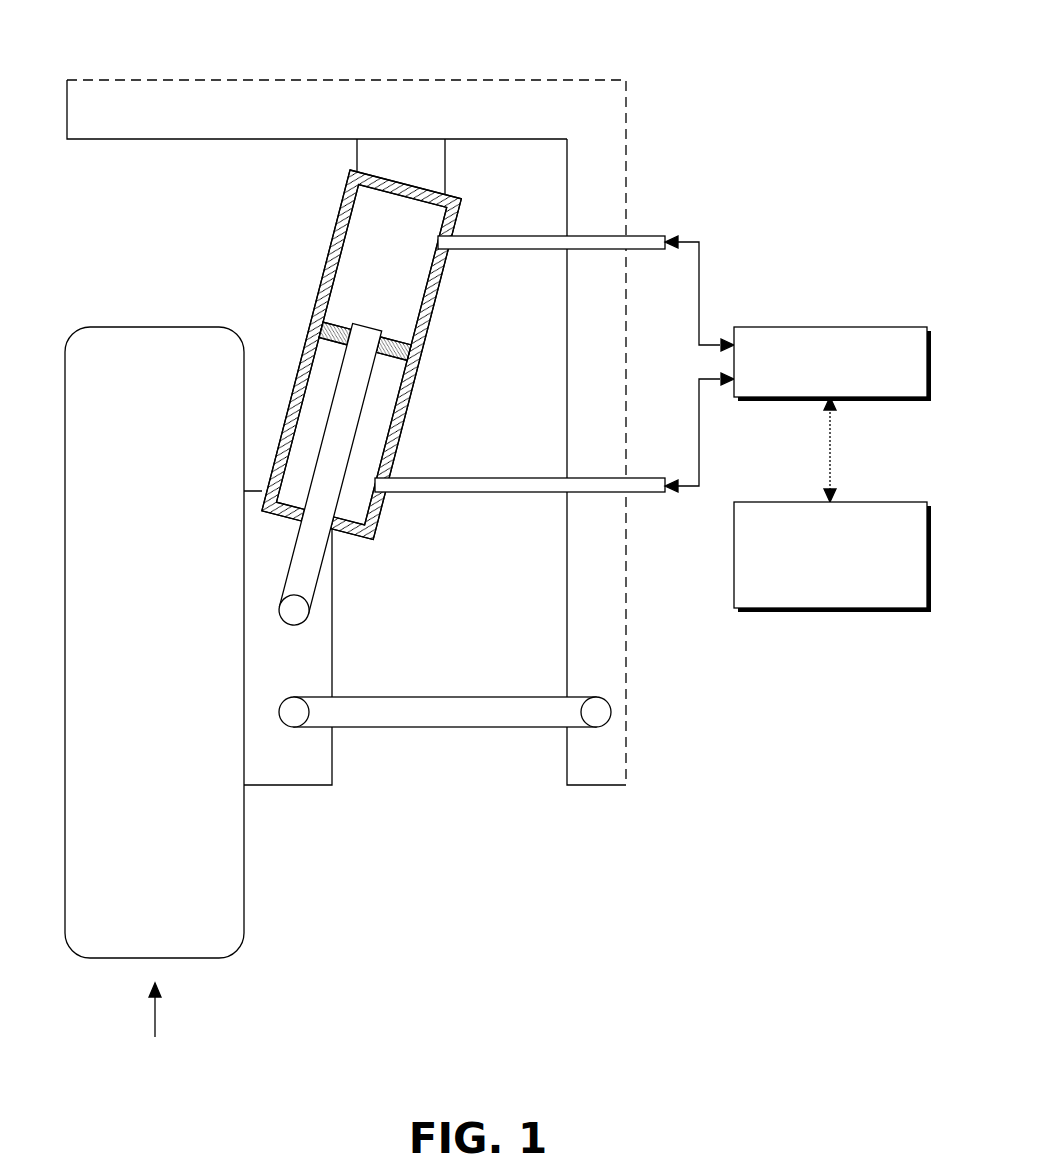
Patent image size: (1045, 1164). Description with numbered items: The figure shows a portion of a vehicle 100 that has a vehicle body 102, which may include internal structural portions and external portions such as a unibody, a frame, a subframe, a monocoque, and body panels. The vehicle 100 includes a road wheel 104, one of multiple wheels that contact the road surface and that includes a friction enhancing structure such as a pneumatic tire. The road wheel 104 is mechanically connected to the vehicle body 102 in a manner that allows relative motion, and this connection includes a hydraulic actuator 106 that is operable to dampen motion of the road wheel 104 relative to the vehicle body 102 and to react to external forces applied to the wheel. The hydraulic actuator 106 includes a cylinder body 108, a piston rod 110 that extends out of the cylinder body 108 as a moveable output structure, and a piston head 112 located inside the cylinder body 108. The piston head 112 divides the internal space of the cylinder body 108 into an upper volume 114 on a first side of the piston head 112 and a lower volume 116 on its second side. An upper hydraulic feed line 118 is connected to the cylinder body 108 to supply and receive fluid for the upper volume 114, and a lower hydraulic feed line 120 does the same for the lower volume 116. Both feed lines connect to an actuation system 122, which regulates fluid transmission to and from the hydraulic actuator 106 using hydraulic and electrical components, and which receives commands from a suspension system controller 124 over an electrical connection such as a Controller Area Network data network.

The vehicle 100 is at (98, 42).
The vehicle body 102 is at (558, 81).
The road wheel 104 is at (98, 325).
The hydraulic actuator 106 is at (320, 186).
The cylinder body 108 is at (332, 243).
The piston rod 110 is at (313, 583).
The piston head 112 is at (408, 350).
The upper volume 114 is at (408, 284).
The lower volume 116 is at (373, 432).
The upper hydraulic feed line 118 is at (487, 236).
The lower hydraulic feed line 120 is at (488, 478).
The actuation system 122 is at (890, 327).
The suspension system controller 124 is at (889, 502).